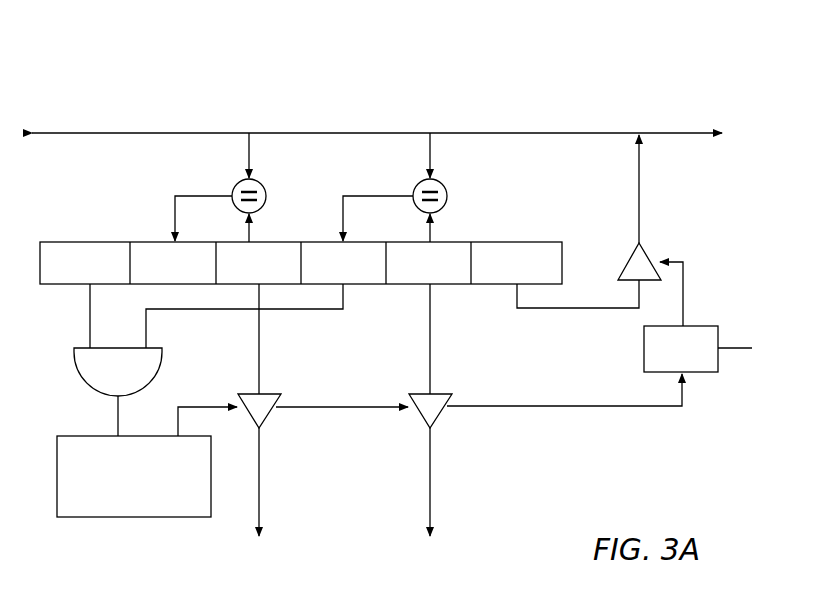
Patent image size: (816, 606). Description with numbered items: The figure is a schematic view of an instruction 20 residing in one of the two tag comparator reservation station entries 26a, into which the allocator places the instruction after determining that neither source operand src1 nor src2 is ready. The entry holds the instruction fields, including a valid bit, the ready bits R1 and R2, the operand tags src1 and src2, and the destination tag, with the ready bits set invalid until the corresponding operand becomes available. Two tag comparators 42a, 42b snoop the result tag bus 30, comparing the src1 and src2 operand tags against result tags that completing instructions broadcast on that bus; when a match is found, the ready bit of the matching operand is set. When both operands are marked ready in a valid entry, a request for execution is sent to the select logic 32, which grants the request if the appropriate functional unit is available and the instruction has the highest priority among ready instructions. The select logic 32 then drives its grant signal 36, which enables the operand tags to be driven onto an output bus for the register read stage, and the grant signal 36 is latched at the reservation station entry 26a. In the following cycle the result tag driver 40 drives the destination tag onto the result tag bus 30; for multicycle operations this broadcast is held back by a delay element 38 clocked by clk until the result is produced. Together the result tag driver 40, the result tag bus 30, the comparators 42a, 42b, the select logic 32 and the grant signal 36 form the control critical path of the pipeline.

The instruction 20 is at (540, 242).
The two tag comparator entry reservation station 26a is at (574, 68).
The result tag bus 30 is at (564, 133).
The select logic 32 is at (78, 435).
The grant signal 36 is at (189, 422).
The delay element 38 is at (699, 325).
The result tag driver 40 is at (457, 420).
The tag comparator 42a is at (267, 181).
The tag comparator 42b is at (449, 181).